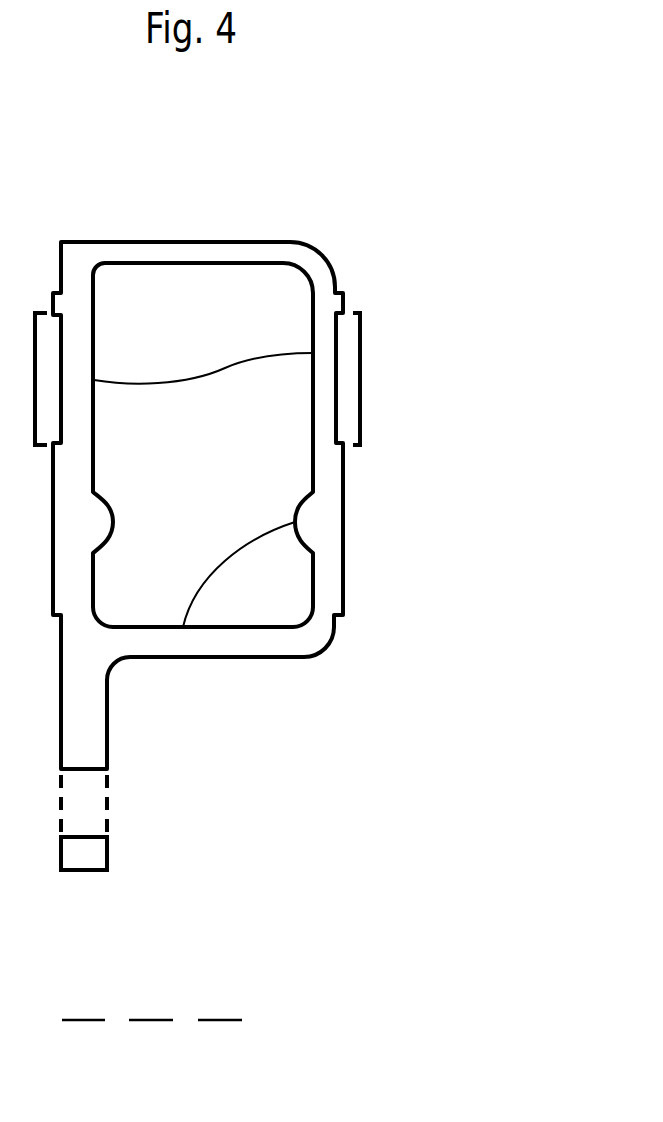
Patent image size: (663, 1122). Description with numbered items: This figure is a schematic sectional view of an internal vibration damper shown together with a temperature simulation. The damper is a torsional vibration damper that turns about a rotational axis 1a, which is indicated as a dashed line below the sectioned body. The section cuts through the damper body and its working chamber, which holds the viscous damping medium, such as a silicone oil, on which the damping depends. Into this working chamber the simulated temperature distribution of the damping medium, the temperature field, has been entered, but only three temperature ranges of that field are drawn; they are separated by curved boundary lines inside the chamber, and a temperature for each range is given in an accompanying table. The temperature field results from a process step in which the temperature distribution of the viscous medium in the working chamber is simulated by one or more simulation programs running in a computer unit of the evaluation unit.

The rotational axis 1a is at (222, 1020).